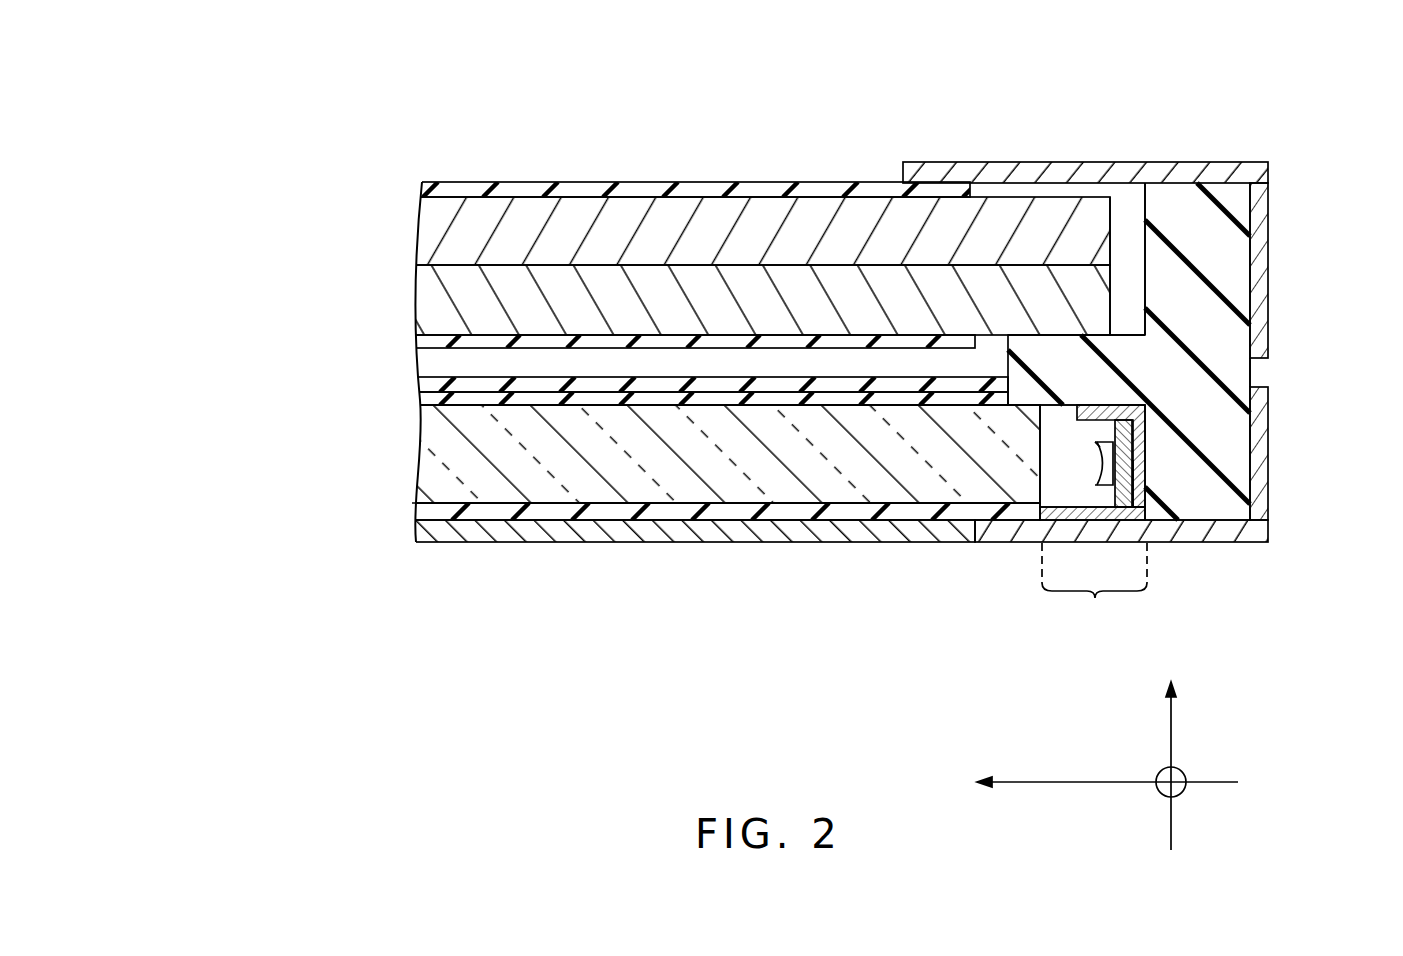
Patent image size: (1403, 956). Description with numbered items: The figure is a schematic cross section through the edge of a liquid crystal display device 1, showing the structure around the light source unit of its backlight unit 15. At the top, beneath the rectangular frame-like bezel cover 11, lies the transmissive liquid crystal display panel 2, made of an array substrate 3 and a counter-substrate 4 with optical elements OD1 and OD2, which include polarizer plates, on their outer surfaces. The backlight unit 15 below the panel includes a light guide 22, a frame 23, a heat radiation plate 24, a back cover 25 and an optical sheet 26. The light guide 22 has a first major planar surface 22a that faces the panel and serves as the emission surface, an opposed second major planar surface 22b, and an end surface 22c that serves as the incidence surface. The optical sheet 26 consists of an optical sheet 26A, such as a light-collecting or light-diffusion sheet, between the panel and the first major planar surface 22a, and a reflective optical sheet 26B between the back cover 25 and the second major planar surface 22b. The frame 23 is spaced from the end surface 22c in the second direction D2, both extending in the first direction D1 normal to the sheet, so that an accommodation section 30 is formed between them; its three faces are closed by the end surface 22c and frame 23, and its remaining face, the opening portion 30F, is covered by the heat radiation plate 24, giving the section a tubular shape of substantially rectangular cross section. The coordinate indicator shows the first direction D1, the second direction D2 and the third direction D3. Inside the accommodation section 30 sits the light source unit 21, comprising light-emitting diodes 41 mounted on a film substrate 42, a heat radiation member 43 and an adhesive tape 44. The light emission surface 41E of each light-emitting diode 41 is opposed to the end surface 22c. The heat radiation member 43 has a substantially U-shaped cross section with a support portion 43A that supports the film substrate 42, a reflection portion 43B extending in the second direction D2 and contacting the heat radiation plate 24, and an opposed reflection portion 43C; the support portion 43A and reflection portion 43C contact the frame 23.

The liquid crystal display device 1 is at (916, 102).
The liquid crystal display panel 2 is at (333, 197).
The array substrate 3 is at (430, 286).
The counter-substrate 4 is at (425, 226).
The bezel cover 11 is at (1265, 165).
The backlight unit 15 is at (418, 383).
The light source unit 21 is at (1150, 400).
The light guide 22 is at (627, 490).
The first major planar surface 22a is at (737, 407).
The second major planar surface 22b is at (822, 505).
The end surface 22c is at (1047, 511).
The frame 23 is at (1237, 208).
The heat radiation plate 24 is at (1250, 543).
The back cover 25 is at (462, 522).
The optical sheet 26 is at (337, 397).
The optical sheet 26A is at (426, 395).
The optical sheet 26B is at (437, 514).
The accommodation section 30 is at (1061, 437).
The opening portion 30F is at (1094, 587).
The light-emitting diode 41 is at (1095, 458).
The light emission surface 41E is at (1092, 442).
The film substrate 42 is at (1105, 453).
The heat radiation member 43 is at (1163, 524).
The support portion 43A is at (1148, 518).
The reflection portion 43B is at (1091, 483).
The reflection portion 43C is at (1237, 368).
The adhesive tape 44 is at (1131, 478).
The optical element OD1 is at (420, 340).
The optical element OD2 is at (425, 188).
The first direction D1 is at (1186, 793).
The second direction D2 is at (1088, 781).
The third direction D3 is at (1170, 749).